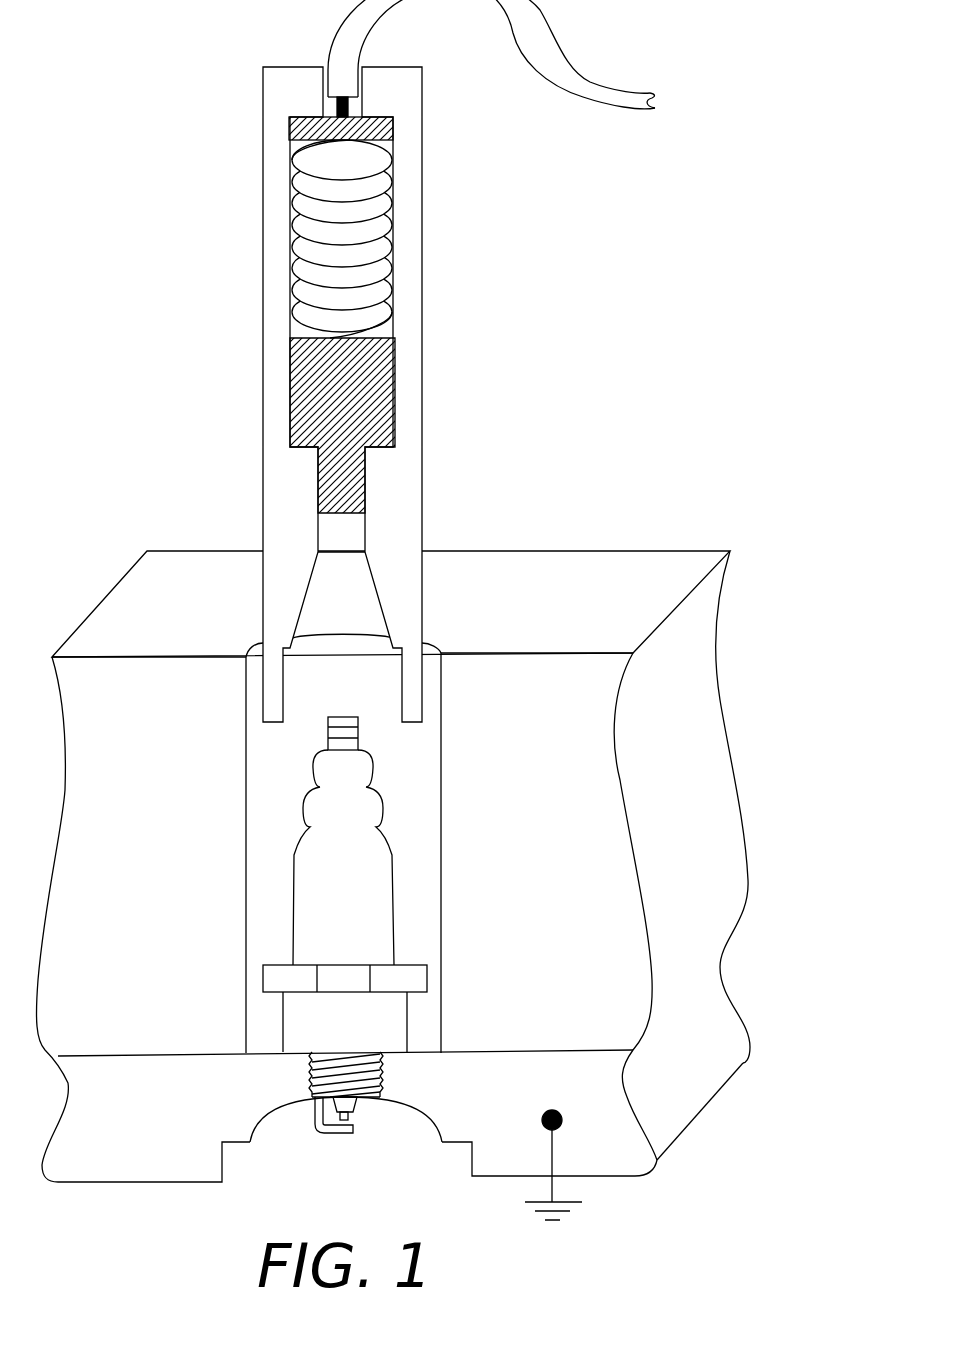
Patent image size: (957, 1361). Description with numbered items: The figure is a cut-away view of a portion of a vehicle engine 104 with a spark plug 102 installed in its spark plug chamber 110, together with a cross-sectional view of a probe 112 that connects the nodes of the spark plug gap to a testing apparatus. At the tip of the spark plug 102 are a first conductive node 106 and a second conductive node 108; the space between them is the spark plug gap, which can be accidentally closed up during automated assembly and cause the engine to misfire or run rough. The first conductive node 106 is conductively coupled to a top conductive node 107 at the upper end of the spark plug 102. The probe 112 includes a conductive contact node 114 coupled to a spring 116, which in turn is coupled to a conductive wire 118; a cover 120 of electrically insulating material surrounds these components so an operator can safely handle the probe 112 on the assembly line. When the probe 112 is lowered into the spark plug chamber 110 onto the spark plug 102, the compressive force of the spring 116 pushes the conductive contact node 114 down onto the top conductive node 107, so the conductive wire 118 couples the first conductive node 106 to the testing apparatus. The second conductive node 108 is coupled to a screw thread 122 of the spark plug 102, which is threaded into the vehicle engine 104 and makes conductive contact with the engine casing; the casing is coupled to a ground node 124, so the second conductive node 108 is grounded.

The spark plug 102 is at (311, 762).
The vehicle engine 104 is at (538, 564).
The first conductive node 106 is at (357, 1116).
The top conductive node 107 is at (343, 714).
The second conductive node 108 is at (338, 1137).
The spark plug chamber 110 is at (424, 802).
The probe 112 is at (424, 303).
The conductive contact node 114 is at (370, 391).
The spring 116 is at (369, 226).
The conductive wire 118 is at (450, 5).
The cover 120 is at (289, 104).
The screw thread 122 is at (330, 1071).
The ground node 124 is at (571, 1212).